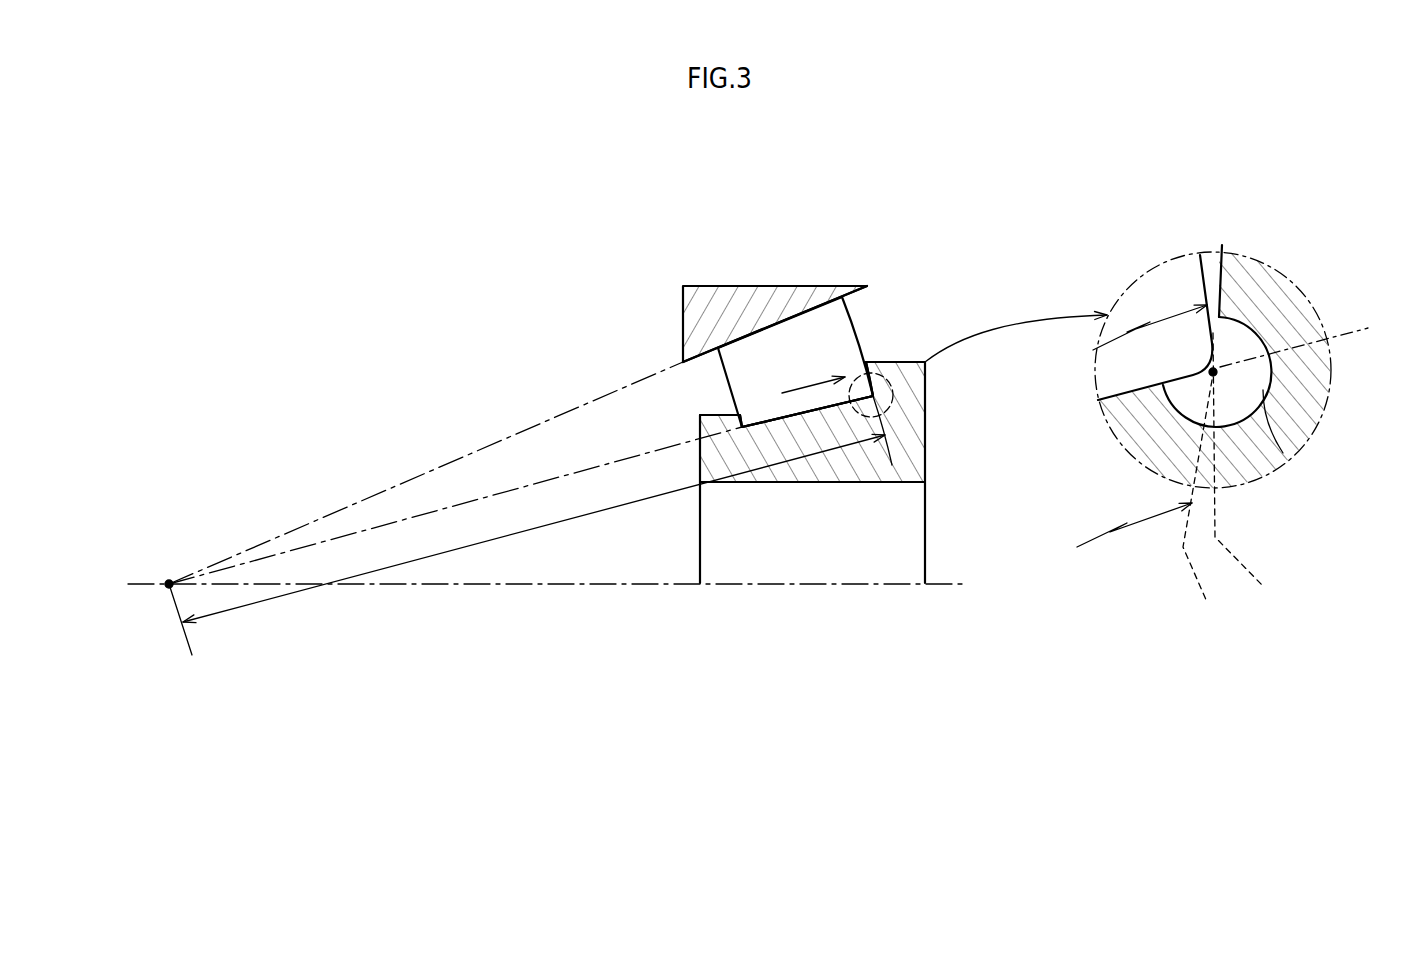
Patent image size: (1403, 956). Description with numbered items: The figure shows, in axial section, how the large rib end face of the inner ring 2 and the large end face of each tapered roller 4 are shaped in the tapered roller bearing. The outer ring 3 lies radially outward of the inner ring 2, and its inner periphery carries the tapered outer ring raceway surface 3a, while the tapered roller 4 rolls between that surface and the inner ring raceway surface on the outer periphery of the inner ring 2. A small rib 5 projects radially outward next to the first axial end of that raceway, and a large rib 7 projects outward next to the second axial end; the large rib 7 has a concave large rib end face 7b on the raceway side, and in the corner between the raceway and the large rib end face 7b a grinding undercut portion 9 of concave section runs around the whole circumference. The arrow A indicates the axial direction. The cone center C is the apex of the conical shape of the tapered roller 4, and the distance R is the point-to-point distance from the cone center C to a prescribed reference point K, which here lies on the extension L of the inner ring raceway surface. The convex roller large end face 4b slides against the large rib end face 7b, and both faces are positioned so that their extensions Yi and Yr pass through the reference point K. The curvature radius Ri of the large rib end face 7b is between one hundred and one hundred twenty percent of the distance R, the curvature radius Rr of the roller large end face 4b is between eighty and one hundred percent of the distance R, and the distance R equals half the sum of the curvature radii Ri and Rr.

The inner ring 2 is at (927, 465).
The outer ring 3 is at (682, 308).
The outer ring raceway surface 3a is at (756, 339).
The tapered roller 4 is at (793, 333).
The roller large end face 4b is at (1207, 285).
The small rib 5 is at (723, 413).
The large rib 7 is at (902, 360).
The large rib end face 7b is at (1215, 287).
The grinding undercut portion 9 is at (1190, 410).
The reference point K is at (893, 398).
The axial direction A is at (802, 393).
The distance R is at (534, 528).
The cone center C is at (169, 584).
The curvature radius of the roller large end face Rr is at (1150, 322).
The curvature radius of the large rib end face Ri is at (1137, 520).
The extension of the inner ring raceway surface L is at (1353, 333).
The extension of the large rib end face Yi is at (1210, 508).
The extension of the roller large end face Yr is at (1254, 471).